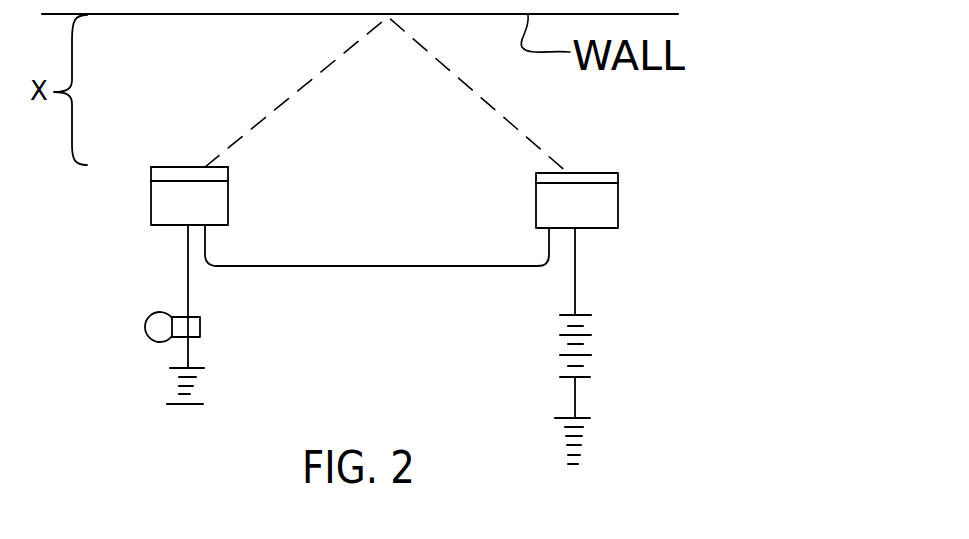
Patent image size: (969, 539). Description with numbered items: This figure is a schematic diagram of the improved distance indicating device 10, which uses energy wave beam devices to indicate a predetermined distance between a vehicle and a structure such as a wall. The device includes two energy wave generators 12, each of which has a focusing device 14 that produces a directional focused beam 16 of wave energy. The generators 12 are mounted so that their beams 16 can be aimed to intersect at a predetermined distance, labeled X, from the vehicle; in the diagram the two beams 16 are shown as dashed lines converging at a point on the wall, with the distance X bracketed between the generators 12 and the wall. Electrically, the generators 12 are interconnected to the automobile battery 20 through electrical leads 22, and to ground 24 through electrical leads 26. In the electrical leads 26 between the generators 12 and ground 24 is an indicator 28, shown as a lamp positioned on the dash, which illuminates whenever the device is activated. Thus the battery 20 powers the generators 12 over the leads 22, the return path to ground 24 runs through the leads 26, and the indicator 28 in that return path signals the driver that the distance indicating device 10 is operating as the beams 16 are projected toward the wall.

The distance indicating device 10 is at (745, 368).
The energy wave generator 12 is at (210, 203).
The focusing device 14 is at (173, 175).
The directional focused beam 16 is at (314, 76).
The automobile battery 20 is at (591, 327).
The electrical lead 22 is at (328, 266).
The ground 24 is at (582, 445).
The electrical lead 26 is at (190, 350).
The indicator 28 is at (147, 328).